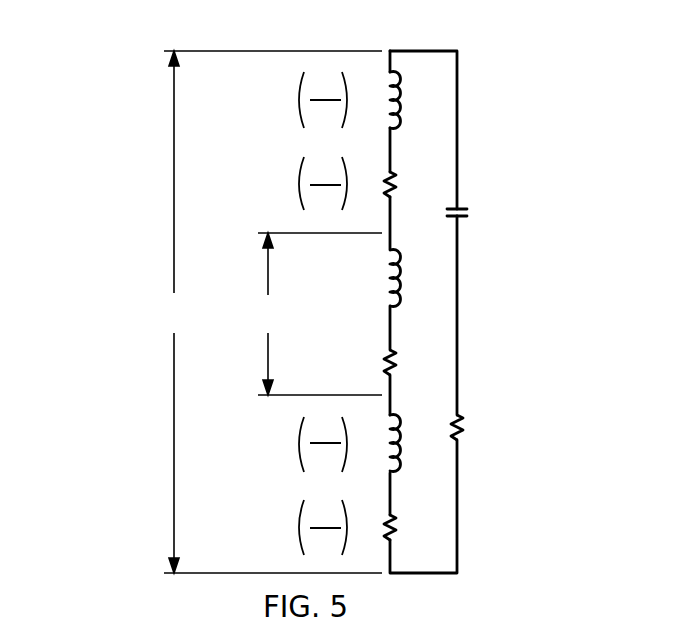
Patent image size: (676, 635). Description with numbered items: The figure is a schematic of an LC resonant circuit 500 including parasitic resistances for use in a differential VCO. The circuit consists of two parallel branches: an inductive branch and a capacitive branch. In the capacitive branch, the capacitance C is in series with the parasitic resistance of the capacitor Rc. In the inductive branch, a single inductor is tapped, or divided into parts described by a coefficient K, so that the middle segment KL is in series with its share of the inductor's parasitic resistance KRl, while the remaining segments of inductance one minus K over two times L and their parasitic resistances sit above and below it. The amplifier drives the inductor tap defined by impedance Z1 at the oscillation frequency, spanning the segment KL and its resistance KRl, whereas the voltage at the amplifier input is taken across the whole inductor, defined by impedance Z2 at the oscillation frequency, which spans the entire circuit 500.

The LC resonant circuit 500 is at (267, 312).
The capacitance C is at (469, 214).
The parasitic resistance of the capacitor Rc is at (470, 429).
The inductor segment KL is at (374, 278).
The parasitic resistance of inductor segment KRl is at (370, 364).